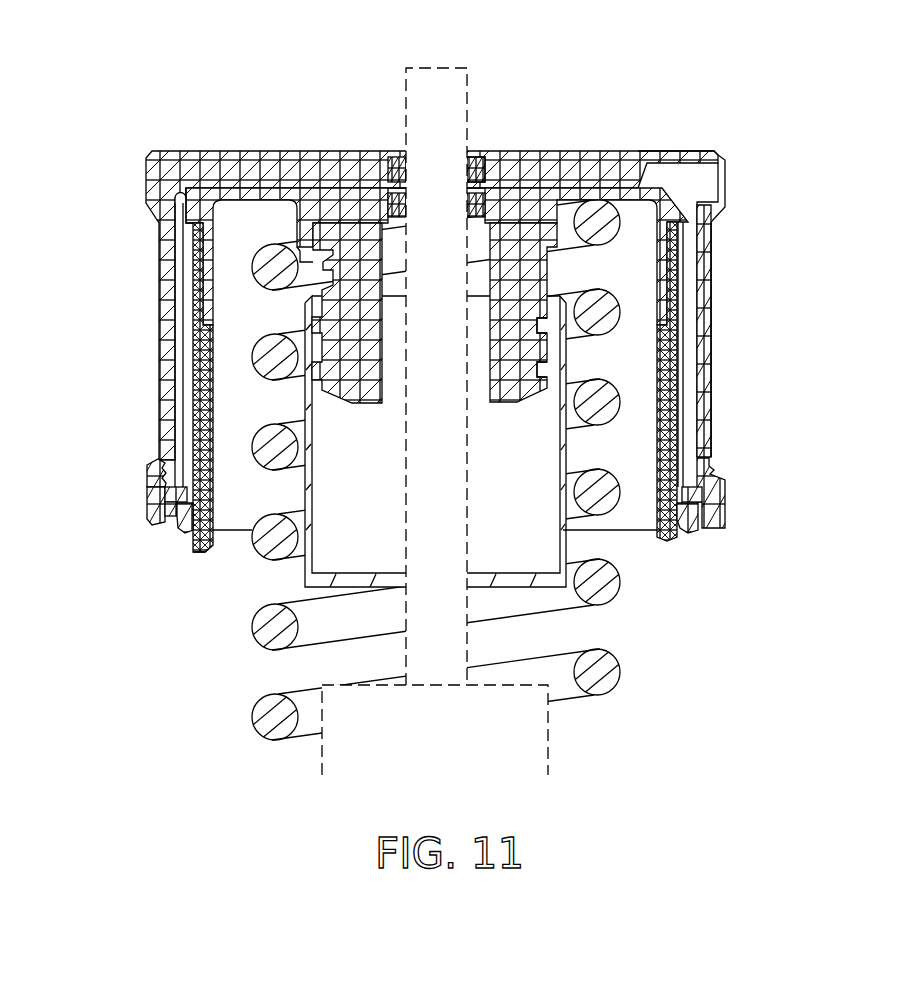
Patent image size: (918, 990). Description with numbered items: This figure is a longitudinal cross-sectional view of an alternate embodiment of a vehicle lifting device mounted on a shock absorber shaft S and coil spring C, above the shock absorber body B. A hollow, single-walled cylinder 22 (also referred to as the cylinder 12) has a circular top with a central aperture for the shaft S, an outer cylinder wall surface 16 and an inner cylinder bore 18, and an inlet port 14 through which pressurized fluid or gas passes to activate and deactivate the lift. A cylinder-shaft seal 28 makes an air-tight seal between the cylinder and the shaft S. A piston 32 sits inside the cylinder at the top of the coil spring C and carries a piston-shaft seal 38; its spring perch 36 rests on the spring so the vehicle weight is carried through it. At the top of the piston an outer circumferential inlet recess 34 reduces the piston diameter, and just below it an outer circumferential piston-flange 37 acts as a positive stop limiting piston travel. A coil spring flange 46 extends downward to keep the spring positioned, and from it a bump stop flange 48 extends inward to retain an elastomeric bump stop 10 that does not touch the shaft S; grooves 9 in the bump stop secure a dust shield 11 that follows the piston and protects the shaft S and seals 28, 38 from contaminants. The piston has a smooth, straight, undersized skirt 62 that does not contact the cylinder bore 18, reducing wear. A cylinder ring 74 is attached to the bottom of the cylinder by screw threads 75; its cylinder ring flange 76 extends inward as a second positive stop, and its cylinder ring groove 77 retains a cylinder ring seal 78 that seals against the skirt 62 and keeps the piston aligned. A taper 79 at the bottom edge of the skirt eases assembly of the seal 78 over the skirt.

The bump stop grooves 9 is at (546, 254).
The bump stop 10 is at (497, 408).
The dust shield 11 is at (302, 568).
The cylinder 12 is at (243, 170).
The inlet port 14 is at (729, 161).
The outer cylinder wall surface 16 is at (716, 311).
The cylinder bore 18 is at (703, 405).
The cylinder 22 is at (645, 149).
The cylinder-shaft seal 28 is at (470, 162).
The piston 32 is at (476, 159).
The outer circumferential inlet recess 34 is at (185, 199).
The spring perch 36 is at (249, 204).
The piston-flange 37 is at (176, 226).
The piston-shaft seal 38 is at (558, 203).
The coil spring flange 46 is at (297, 269).
The bump stop flange 48 is at (317, 246).
The piston skirt 62 is at (194, 408).
The cylinder ring 74 is at (152, 475).
The screw threads 75 is at (177, 493).
The cylinder ring flange 76 is at (154, 492).
The cylinder ring groove 77 is at (170, 518).
The cylinder ring seal 78 is at (183, 518).
The taper 79 is at (193, 551).
The shock absorber body B is at (558, 718).
The coil spring C is at (597, 397).
The shock absorber shaft S is at (450, 95).